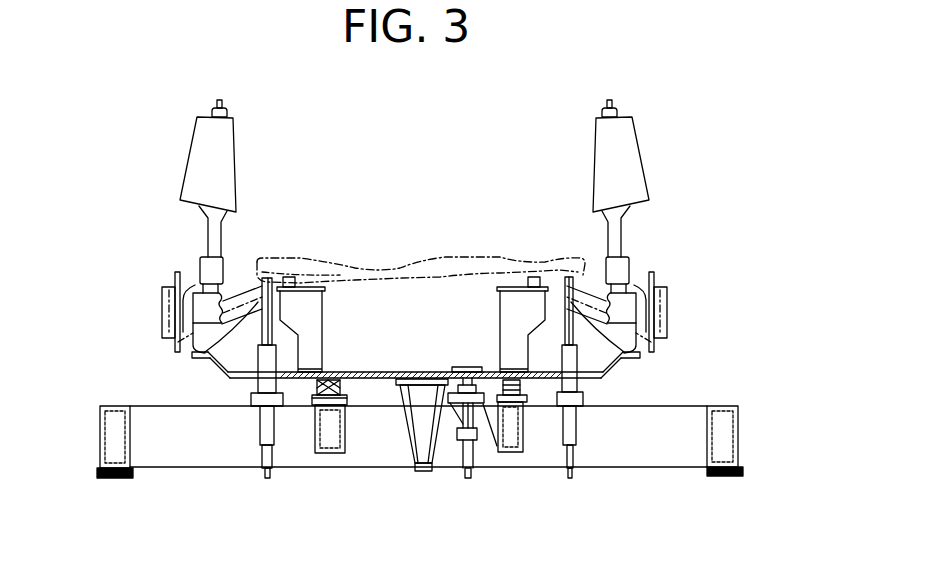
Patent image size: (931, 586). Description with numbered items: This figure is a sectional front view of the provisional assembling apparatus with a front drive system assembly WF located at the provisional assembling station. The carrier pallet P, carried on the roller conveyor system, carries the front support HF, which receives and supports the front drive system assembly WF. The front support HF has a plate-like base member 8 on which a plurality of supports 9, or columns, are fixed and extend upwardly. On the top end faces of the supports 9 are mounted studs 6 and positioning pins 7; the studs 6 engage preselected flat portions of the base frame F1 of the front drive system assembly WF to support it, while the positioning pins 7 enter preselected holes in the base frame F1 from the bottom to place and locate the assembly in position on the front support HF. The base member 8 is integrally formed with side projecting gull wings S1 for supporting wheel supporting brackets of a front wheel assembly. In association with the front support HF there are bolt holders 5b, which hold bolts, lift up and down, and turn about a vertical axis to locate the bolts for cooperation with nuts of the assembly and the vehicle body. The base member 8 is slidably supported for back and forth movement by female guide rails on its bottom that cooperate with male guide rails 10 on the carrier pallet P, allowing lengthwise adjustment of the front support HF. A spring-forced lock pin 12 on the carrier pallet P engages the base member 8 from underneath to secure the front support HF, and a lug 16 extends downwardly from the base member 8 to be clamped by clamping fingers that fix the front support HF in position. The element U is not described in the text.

The bolt holder 5b is at (230, 377).
The stud 6 is at (312, 286).
The positioning pin 7 is at (283, 277).
The plate-like base member 8 is at (373, 372).
The support 9 is at (323, 322).
The male guide rail 10 is at (354, 394).
The lock pin 12 is at (466, 367).
The lug 16 is at (422, 472).
The unit mechanism U is at (208, 243).
The front drive system assembly WF is at (423, 257).
The base frame F1 is at (450, 262).
The gull wing S1 is at (192, 356).
The front support HF is at (583, 339).
The carrier pallet P is at (728, 402).